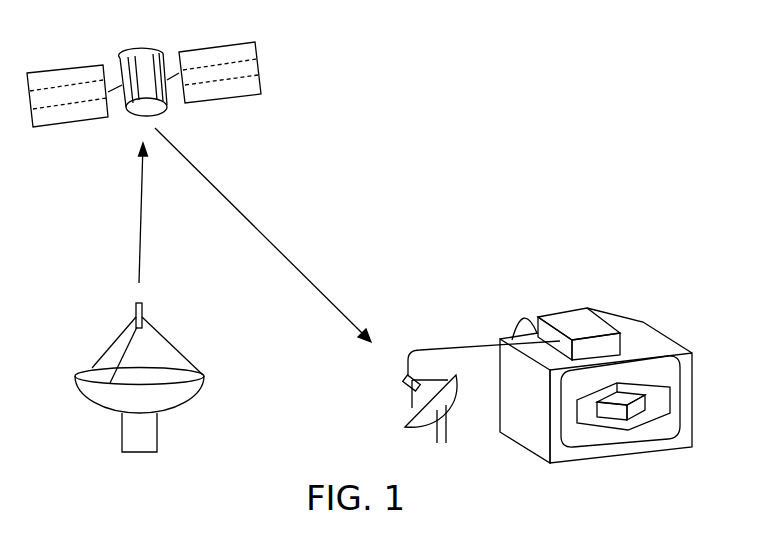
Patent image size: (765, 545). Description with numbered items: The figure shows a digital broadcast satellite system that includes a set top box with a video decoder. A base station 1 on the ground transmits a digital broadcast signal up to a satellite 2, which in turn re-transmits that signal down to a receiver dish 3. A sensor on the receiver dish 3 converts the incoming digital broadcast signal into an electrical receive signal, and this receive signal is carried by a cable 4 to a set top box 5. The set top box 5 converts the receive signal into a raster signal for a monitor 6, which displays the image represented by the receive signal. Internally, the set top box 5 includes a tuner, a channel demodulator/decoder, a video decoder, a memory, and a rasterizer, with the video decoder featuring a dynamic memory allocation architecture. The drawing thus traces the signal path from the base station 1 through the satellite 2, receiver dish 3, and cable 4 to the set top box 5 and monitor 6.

The base station 1 is at (108, 412).
The satellite 2 is at (130, 53).
The receiver dish 3 is at (412, 408).
The cable 4 is at (455, 347).
The set top box 5 is at (558, 311).
The monitor 6 is at (693, 400).